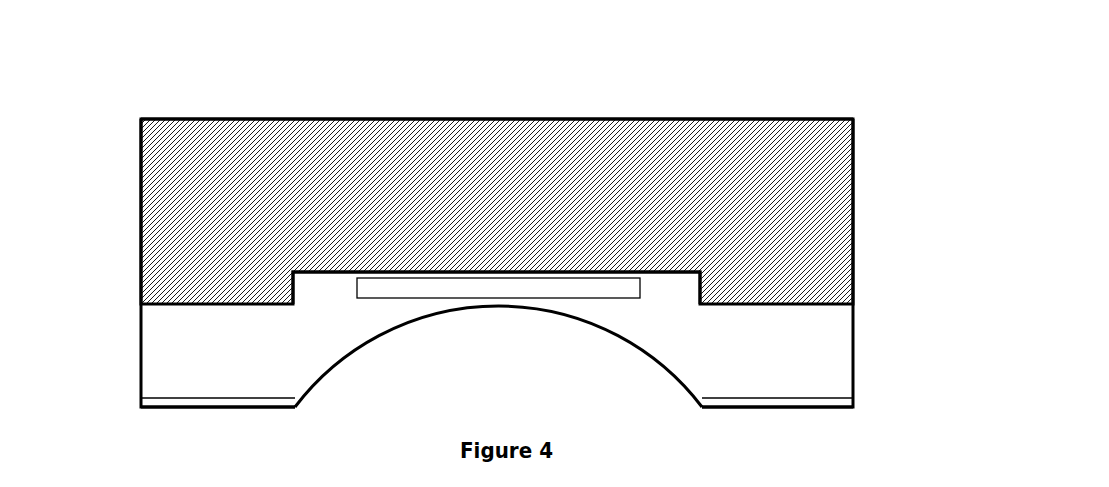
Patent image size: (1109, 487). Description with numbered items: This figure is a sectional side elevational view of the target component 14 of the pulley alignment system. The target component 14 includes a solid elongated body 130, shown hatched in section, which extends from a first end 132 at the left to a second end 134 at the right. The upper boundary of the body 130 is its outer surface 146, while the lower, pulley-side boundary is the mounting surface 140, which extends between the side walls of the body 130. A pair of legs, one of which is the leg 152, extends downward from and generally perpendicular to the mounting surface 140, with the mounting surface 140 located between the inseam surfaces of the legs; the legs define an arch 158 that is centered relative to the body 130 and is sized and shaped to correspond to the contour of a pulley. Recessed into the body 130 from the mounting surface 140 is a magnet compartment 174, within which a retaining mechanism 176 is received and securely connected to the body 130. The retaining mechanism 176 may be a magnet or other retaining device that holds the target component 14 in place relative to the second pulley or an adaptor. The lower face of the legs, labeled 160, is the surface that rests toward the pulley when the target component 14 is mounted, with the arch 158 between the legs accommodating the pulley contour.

The target component 14 is at (697, 85).
The elongated body 130 is at (510, 157).
The first end 132 is at (141, 188).
The second end 134 is at (853, 200).
The outer surface 146 is at (345, 117).
The mounting surface 140 is at (185, 305).
The leg 152 is at (815, 363).
The arch 158 is at (640, 352).
The bottom surface 160 is at (780, 403).
The magnet compartment 174 is at (297, 285).
The retaining mechanism 176 is at (428, 287).